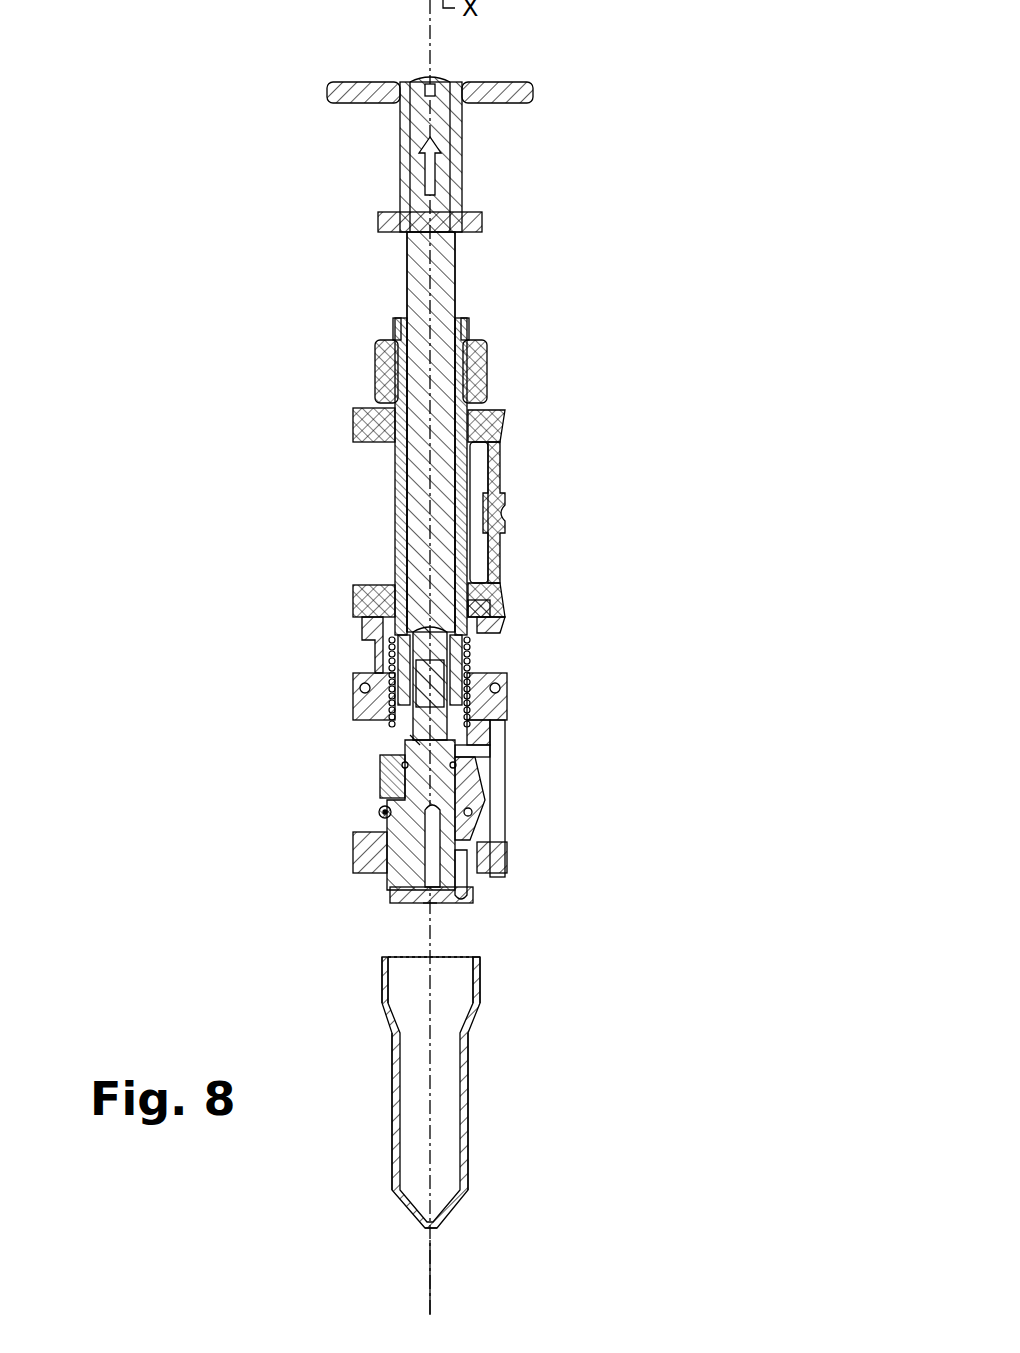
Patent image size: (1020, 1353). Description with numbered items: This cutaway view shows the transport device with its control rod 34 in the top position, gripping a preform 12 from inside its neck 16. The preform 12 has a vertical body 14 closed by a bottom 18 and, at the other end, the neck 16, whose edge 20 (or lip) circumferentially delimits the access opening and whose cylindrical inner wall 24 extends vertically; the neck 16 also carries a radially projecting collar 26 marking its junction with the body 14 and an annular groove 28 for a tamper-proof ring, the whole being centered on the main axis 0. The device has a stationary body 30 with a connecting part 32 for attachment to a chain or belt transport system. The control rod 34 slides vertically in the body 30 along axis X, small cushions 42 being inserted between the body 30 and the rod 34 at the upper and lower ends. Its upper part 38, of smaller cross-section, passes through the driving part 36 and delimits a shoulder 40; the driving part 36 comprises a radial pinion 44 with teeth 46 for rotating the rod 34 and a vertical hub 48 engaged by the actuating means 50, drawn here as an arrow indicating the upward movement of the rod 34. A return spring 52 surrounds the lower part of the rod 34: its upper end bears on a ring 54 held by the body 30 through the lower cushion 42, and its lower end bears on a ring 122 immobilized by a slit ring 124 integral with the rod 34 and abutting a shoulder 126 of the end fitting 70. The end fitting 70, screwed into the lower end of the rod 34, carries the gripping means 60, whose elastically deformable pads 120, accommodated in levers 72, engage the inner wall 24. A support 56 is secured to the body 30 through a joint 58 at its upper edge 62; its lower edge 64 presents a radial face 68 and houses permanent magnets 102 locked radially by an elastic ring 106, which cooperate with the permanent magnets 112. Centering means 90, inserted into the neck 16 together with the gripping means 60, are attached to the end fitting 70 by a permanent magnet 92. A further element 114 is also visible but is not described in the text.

The main axis 0 is at (430, 1305).
The preform 12 is at (503, 1087).
The body 14 is at (468, 1145).
The neck 16 is at (482, 985).
The bottom 18 is at (428, 1233).
The edge 20 is at (477, 945).
The inner wall 24 is at (397, 982).
The collar 26 is at (382, 990).
The annular groove 28 is at (480, 975).
The body 30 is at (395, 532).
The connecting part 32 is at (488, 512).
The control rod 34 is at (420, 505).
The driving part 36 is at (487, 157).
The upper part 38 is at (423, 200).
The shoulder 40 is at (443, 250).
The small cushions 42 is at (470, 368).
The pinion 44 is at (365, 93).
The teeth 46 is at (523, 93).
The hub 48 is at (457, 195).
The actuating means 50 is at (423, 170).
The return spring 52 is at (468, 668).
The ring 54 is at (390, 655).
The support 56 is at (502, 760).
The joint 58 is at (500, 688).
The gripping means 60 is at (570, 933).
The upper edge 62 is at (362, 700).
The lower edge 64 is at (380, 820).
The radial face 68 is at (390, 880).
The end fitting 70 is at (423, 757).
The lever 72 is at (495, 833).
The centering means 90 is at (400, 885).
The permanent magnet 92 is at (395, 905).
The permanent magnets 102 is at (353, 855).
The elastic ring 106 is at (487, 860).
The permanent magnets 112 is at (477, 778).
The pin 114 is at (403, 768).
The pads 120 is at (470, 885).
The ring 122 is at (470, 722).
The slit ring 124 is at (482, 745).
The shoulder 126 is at (410, 743).